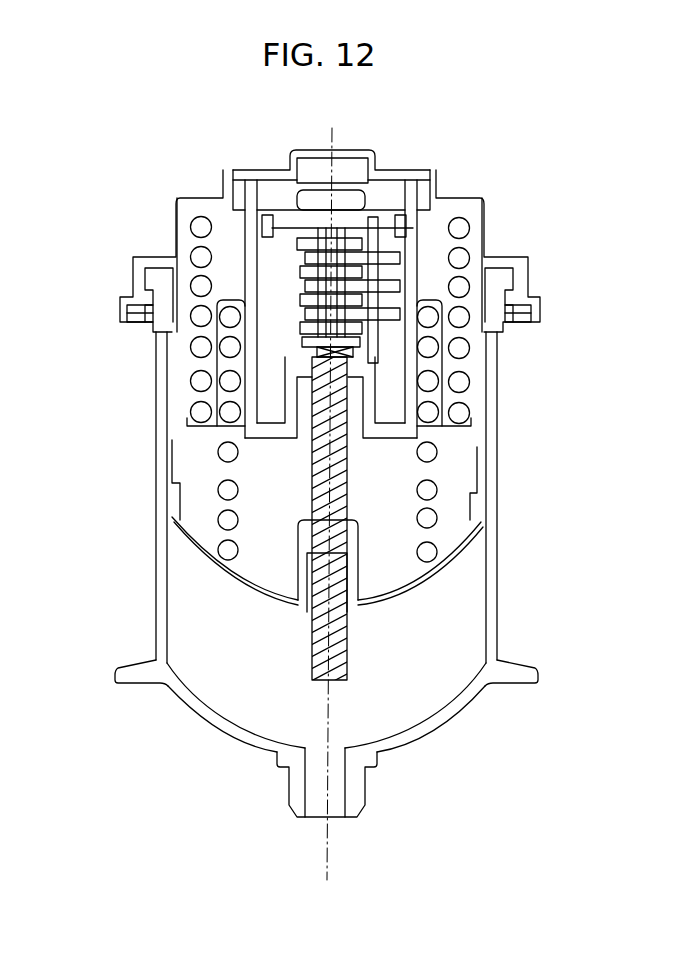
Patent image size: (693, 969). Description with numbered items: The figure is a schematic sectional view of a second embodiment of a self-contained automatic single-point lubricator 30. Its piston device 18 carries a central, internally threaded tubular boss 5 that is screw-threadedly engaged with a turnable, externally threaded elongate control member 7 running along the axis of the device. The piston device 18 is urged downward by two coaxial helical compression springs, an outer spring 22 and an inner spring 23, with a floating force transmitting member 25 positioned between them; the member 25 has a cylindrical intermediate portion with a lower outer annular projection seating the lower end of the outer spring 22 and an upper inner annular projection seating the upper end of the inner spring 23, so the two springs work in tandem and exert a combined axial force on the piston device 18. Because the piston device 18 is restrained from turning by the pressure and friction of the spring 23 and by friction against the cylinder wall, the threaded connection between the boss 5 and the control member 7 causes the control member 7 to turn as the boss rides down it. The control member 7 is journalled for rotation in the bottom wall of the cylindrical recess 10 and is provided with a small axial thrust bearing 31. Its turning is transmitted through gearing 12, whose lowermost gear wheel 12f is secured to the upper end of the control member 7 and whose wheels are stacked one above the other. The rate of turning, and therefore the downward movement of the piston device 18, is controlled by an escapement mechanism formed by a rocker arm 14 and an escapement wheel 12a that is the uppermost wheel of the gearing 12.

The tubular boss 5 is at (357, 545).
The control member 7 is at (310, 470).
The cylindrical recess 10 is at (412, 362).
The gearing 12 is at (290, 278).
The escapement wheel 12a is at (348, 240).
The gear wheel 12f is at (303, 343).
The rocker arm 14 is at (302, 232).
The piston device 18 is at (405, 587).
The outer helical compression spring 22 is at (463, 387).
The inner helical compression spring 23 is at (430, 518).
The force transmitting member 25 is at (213, 398).
The self-contained automatic lubricator 30 is at (545, 452).
The axial thrust bearing 31 is at (440, 353).